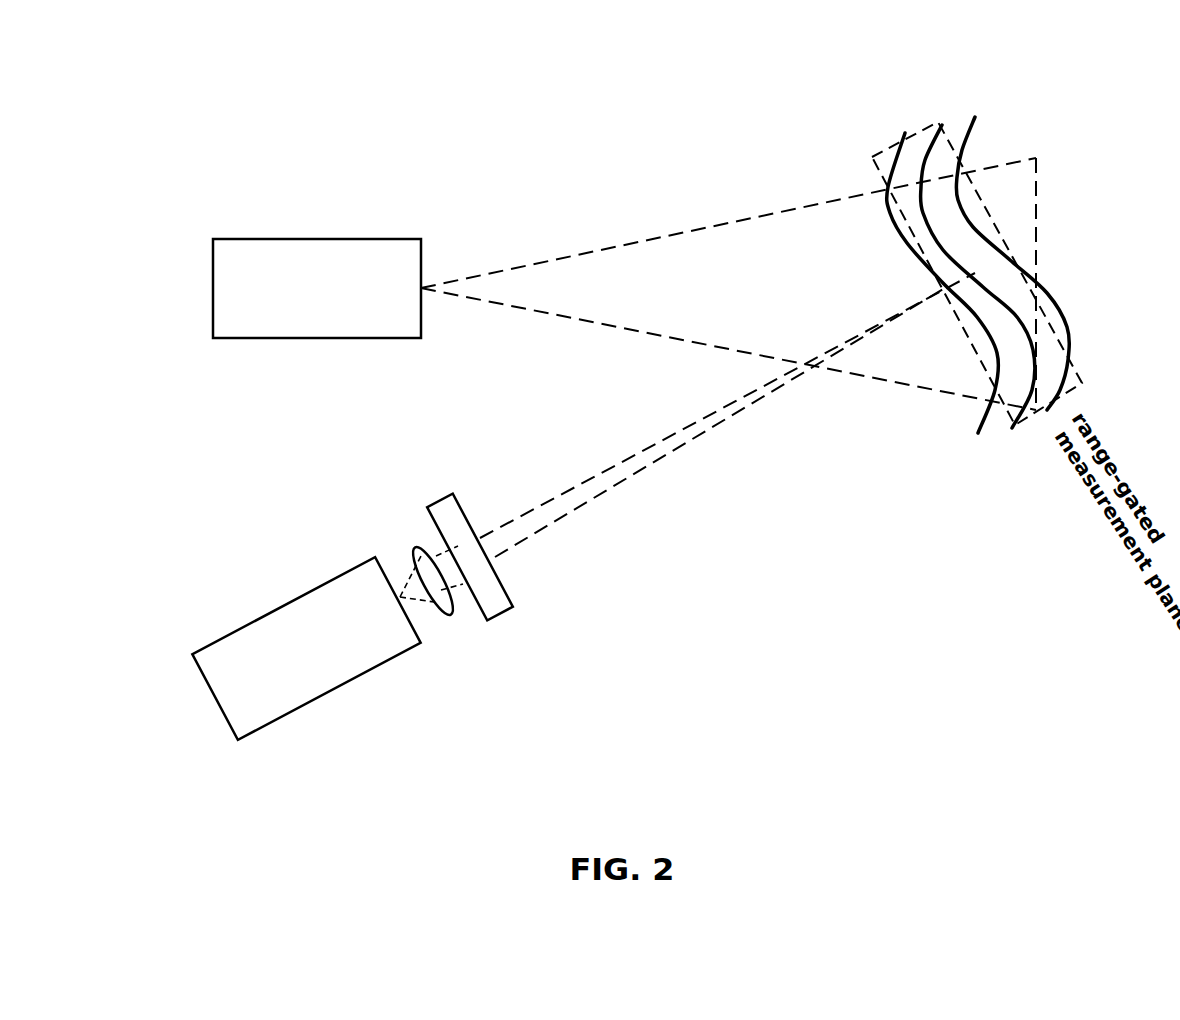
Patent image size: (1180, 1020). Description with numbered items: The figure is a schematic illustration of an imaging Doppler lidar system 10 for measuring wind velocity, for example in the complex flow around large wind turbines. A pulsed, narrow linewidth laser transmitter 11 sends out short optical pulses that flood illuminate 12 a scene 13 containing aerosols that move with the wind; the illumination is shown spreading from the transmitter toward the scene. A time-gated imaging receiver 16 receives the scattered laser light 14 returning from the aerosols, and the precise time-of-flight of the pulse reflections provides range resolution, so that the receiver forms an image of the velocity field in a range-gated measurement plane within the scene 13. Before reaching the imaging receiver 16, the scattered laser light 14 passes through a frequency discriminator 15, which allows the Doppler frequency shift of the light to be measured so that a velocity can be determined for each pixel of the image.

The imaging Doppler lidar system 10 is at (431, 82).
The laser transmitter 11 is at (242, 238).
The flood illumination 12 is at (730, 222).
The scene 13 is at (891, 111).
The scattered laser light 14 is at (655, 468).
The frequency discriminator 15 is at (438, 497).
The imaging receiver 16 is at (253, 620).